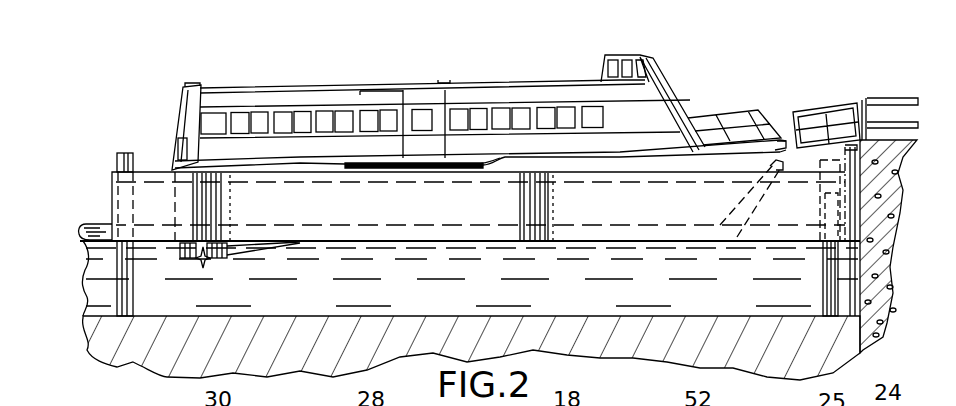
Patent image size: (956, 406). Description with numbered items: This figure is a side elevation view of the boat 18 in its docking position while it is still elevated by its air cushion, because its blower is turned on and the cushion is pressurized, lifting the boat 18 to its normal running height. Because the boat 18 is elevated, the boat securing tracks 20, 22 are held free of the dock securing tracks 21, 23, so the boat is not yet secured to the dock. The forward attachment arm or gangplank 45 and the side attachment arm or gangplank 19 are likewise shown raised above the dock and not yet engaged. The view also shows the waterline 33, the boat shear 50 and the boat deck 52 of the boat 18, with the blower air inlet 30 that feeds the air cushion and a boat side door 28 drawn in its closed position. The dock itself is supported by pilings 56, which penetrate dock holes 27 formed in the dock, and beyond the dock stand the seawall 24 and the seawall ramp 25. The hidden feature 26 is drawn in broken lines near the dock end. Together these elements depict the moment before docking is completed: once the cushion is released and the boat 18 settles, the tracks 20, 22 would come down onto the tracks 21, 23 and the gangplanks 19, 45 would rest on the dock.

The boat 18 is at (532, 82).
The side attachment arm or gangplank 19 is at (487, 163).
The boat securing track 20 is at (407, 170).
The dock securing track 21 is at (465, 185).
The boat securing track 22 is at (782, 146).
The dock securing track 23 is at (770, 164).
The seawall 24 is at (887, 147).
The seawall ramp 25 is at (823, 137).
The hidden cable 26 is at (786, 219).
The dock holes 27 is at (118, 196).
The boat side door 28 is at (418, 100).
The blower air inlet 30 is at (192, 84).
The waterline 33 is at (90, 222).
The forward attachment arm or gangplank 45 is at (782, 140).
The boat shear 50 is at (660, 154).
The boat deck 52 is at (628, 146).
The pilings 56 is at (134, 290).